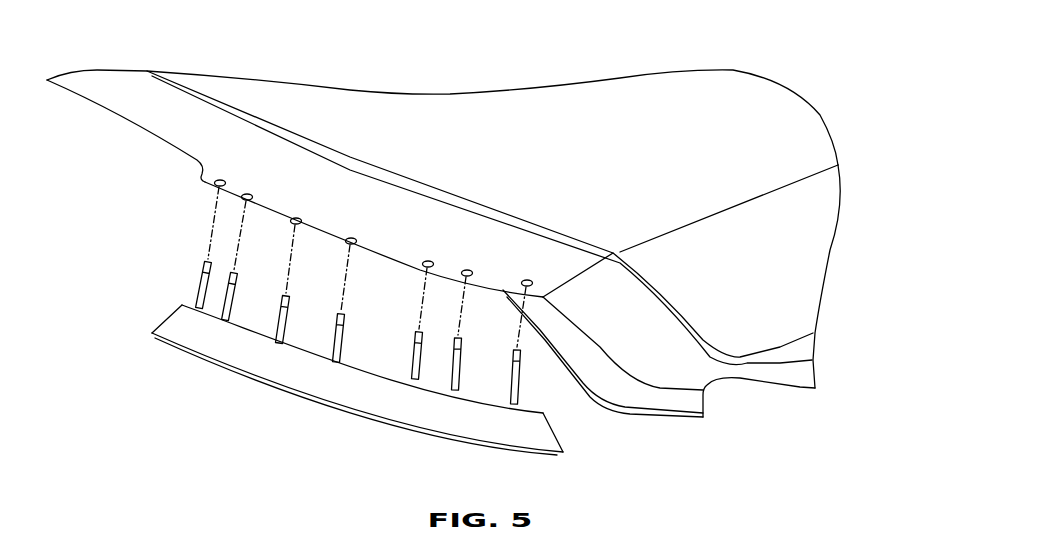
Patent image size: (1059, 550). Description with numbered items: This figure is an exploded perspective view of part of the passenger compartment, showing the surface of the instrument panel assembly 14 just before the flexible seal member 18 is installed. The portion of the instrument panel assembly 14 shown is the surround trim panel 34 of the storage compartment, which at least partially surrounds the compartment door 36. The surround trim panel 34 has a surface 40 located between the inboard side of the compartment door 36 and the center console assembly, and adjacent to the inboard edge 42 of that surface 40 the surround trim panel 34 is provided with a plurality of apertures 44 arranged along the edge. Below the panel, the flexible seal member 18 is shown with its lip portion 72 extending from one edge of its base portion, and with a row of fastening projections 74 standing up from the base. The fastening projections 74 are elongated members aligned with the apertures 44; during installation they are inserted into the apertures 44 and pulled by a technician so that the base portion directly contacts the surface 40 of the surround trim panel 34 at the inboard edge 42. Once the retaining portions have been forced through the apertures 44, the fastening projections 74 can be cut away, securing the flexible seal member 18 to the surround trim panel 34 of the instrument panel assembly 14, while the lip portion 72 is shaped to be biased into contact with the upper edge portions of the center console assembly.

The instrument panel assembly 14 is at (613, 34).
The flexible seal member 18 is at (248, 377).
The surround trim panel 34 is at (94, 70).
The compartment door 36 is at (460, 137).
The surface 40 is at (190, 120).
The inboard edge 42 is at (330, 218).
The apertures 44 is at (225, 181).
The lip portion 72 is at (528, 430).
The fastening projections 74 is at (197, 292).